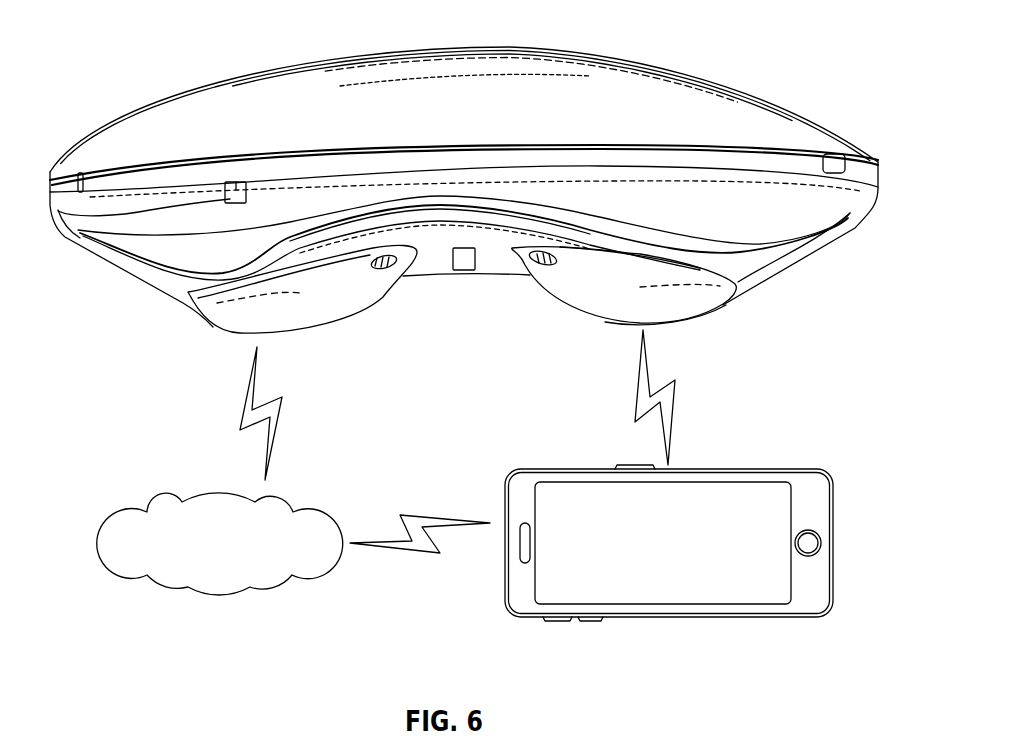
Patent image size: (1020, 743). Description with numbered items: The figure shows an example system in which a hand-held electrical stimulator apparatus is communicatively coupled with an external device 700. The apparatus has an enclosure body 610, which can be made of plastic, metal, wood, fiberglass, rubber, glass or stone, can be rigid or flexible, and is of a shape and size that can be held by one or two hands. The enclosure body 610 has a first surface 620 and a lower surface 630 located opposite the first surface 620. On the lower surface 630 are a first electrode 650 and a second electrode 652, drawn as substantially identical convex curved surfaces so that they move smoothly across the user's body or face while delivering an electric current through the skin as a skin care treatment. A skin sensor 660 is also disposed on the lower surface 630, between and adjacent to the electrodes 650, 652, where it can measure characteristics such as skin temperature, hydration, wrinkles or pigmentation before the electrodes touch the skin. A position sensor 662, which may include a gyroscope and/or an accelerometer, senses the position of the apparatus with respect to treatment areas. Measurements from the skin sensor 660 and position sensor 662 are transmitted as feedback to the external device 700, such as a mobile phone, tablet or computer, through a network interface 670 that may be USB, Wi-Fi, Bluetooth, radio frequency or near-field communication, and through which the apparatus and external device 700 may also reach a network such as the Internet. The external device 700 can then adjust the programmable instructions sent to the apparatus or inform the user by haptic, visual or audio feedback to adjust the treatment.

The enclosure body 610 is at (762, 108).
The first surface 620 is at (658, 70).
The lower surface 630 is at (506, 266).
The first electrode 650 is at (683, 307).
The second electrode 652 is at (217, 327).
The skin sensor 660 is at (463, 259).
The position sensor 662 is at (234, 186).
The network interface 670 is at (267, 588).
The external device 700 is at (666, 622).